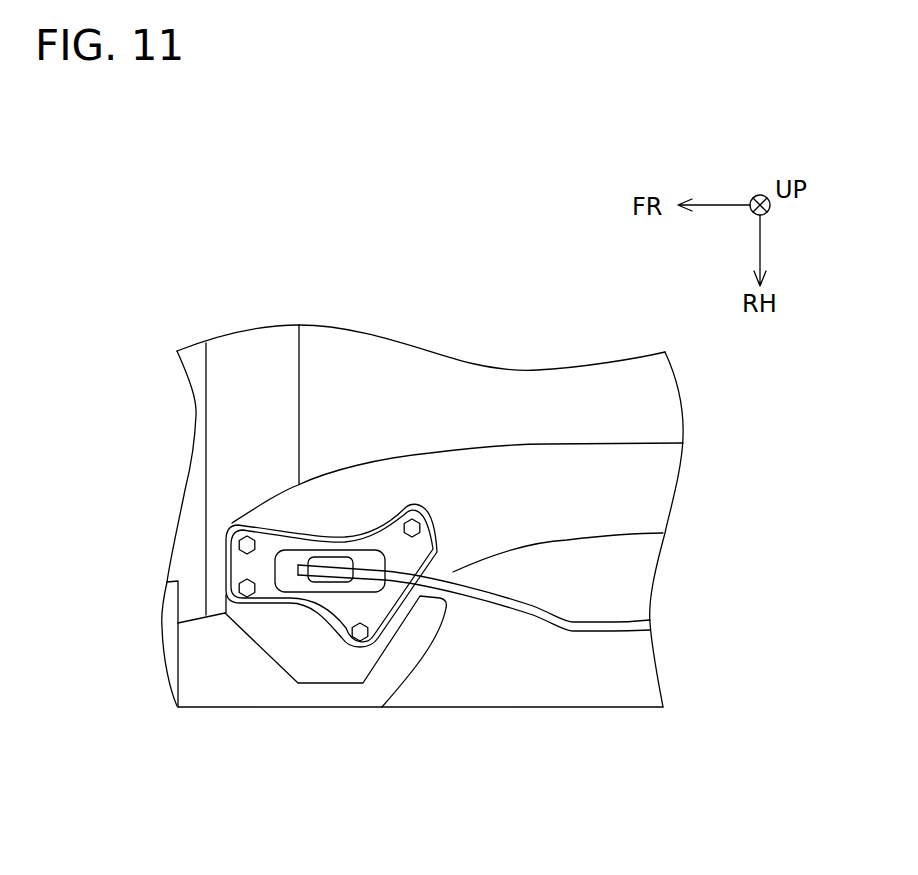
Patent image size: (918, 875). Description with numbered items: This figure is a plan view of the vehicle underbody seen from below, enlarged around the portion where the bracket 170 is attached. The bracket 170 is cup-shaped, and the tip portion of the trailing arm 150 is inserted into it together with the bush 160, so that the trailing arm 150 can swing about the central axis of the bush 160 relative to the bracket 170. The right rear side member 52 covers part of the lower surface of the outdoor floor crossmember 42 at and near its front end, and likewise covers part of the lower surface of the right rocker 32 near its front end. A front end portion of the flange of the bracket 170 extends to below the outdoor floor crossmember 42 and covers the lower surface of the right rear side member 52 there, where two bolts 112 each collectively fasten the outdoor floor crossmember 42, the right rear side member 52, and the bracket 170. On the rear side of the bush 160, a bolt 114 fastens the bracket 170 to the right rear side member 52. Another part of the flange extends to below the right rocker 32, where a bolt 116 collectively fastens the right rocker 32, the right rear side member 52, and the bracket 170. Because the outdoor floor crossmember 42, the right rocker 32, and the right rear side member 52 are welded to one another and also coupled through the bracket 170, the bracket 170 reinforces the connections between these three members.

The right rocker 32 is at (205, 670).
The outdoor floor crossmember 42 is at (240, 428).
The right rear side member 52 is at (547, 477).
The bolts 112 is at (240, 592).
The bolt 114 is at (432, 514).
The bolt 116 is at (368, 636).
The trailing arm 150 is at (580, 627).
The bush 160 is at (307, 580).
The bracket 170 is at (332, 605).